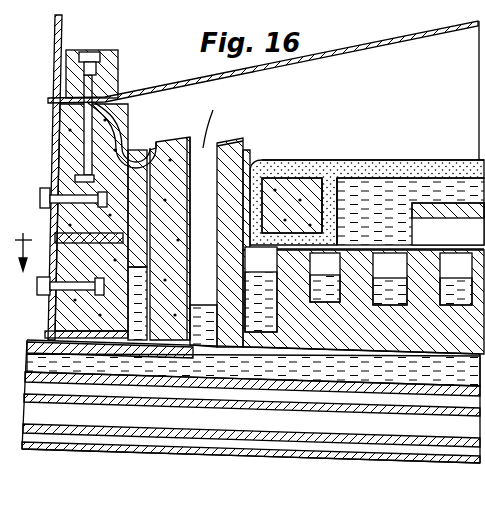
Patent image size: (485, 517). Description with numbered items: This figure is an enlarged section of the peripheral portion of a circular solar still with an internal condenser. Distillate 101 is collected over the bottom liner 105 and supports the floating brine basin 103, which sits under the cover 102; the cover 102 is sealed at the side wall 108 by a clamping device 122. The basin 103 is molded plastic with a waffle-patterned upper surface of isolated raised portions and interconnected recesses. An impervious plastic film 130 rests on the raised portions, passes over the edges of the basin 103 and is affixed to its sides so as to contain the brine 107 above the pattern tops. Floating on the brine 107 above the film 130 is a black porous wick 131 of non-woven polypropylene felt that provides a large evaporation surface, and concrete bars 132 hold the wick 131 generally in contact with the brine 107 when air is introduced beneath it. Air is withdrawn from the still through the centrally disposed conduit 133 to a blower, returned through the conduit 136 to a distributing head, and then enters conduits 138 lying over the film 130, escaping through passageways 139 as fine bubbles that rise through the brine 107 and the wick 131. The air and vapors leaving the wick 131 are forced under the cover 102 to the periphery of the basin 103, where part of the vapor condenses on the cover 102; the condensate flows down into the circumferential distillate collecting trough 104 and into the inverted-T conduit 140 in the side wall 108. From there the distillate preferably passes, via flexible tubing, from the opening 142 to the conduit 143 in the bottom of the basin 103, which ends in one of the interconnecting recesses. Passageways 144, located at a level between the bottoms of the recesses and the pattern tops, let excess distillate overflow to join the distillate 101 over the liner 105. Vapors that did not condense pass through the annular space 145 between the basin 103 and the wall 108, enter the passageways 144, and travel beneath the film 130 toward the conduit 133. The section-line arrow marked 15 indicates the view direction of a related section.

The section line arrow 15 is at (22, 267).
The distillate 101 is at (387, 372).
The cover 102 is at (444, 30).
The floating brine basin 103 is at (253, 165).
The circumferential distillate collecting trough 104 is at (160, 140).
The bottom liner 105 is at (198, 455).
The brine 107 is at (350, 195).
The side wall 108 is at (78, 220).
The clamping device 122 is at (108, 62).
The impervious plastic film 130 is at (222, 140).
The wick 131 is at (482, 172).
The concrete bars 132 is at (335, 195).
The conduit 133 is at (38, 433).
The conduit 136 is at (85, 410).
The conduits 138 is at (456, 222).
The passageways 139 is at (441, 210).
The conduit 140 is at (137, 205).
The opening 142 is at (200, 365).
The conduit 143 is at (262, 357).
The passageways 144 is at (265, 180).
The annular space 145 is at (223, 118).